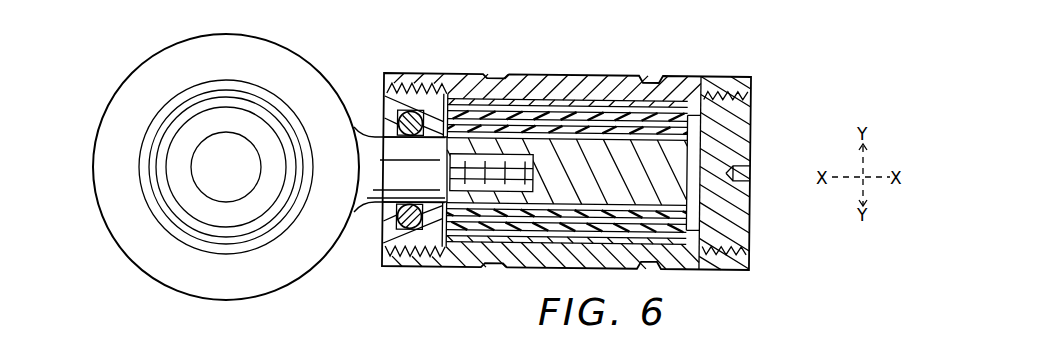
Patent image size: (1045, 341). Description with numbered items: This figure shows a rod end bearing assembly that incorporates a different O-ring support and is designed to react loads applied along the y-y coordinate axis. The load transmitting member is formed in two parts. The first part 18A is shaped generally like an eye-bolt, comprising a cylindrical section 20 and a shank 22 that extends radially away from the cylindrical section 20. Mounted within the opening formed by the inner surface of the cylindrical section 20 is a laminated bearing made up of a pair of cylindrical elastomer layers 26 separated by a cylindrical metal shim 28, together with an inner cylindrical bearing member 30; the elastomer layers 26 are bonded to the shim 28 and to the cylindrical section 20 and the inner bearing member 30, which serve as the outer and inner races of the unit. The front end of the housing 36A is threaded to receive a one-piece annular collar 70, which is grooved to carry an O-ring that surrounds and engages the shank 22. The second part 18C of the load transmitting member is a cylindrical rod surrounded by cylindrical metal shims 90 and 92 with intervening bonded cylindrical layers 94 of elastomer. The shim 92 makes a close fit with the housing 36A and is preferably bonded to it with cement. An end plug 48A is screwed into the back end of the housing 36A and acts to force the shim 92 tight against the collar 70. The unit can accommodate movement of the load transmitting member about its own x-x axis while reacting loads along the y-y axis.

The part of load-transmitting member 18A is at (306, 60).
The second part of load transmitting member 18C is at (693, 151).
The cylindrical section 20 is at (138, 74).
The shank 22 is at (373, 203).
The cylindrical elastomer layers 26 is at (165, 195).
The cylindrical metal shim 28 is at (180, 222).
The inner cylindrical bearing member 30 is at (228, 132).
The housing 36A is at (530, 73).
The end plug 48A is at (738, 207).
The annular collar 70 is at (392, 124).
The cylindrical metal shim 90 is at (684, 127).
The cylindrical metal shim 92 is at (607, 107).
The cylindrical layers of elastomer 94 is at (690, 136).